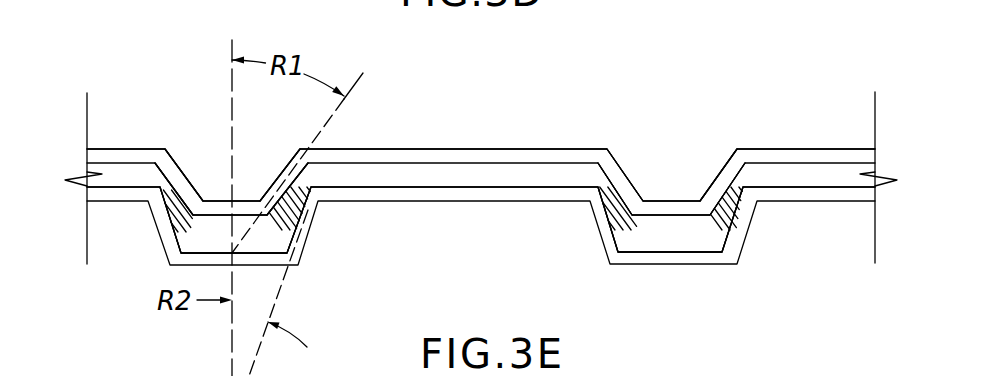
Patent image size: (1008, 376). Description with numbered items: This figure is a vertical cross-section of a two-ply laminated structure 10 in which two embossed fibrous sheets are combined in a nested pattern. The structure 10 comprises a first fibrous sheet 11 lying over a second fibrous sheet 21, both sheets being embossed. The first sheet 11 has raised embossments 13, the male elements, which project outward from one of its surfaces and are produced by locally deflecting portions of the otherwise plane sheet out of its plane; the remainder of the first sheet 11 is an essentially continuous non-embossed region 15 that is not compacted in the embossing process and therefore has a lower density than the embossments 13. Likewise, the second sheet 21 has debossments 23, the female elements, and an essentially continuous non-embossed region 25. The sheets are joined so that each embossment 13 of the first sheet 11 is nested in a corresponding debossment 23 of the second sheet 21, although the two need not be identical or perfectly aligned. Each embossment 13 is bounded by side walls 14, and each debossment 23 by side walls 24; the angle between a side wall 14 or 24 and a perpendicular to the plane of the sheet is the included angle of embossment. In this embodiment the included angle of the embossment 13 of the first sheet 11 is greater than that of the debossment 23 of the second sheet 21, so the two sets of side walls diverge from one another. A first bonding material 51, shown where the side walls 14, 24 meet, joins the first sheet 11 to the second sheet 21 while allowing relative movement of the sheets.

The laminated structure 10 is at (163, 57).
The first fibrous sheet 11 is at (483, 93).
The embossment of the first sheet 13 is at (690, 201).
The side wall of the embossment 14 is at (283, 167).
The non-embossed region of the first sheet 15 is at (568, 149).
The second fibrous sheet 21 is at (484, 259).
The debossment of the second sheet 23 is at (723, 266).
The side wall of the debossment 24 is at (288, 228).
The non-embossed region of the second sheet 25 is at (540, 191).
The first bonding material 51 is at (706, 233).